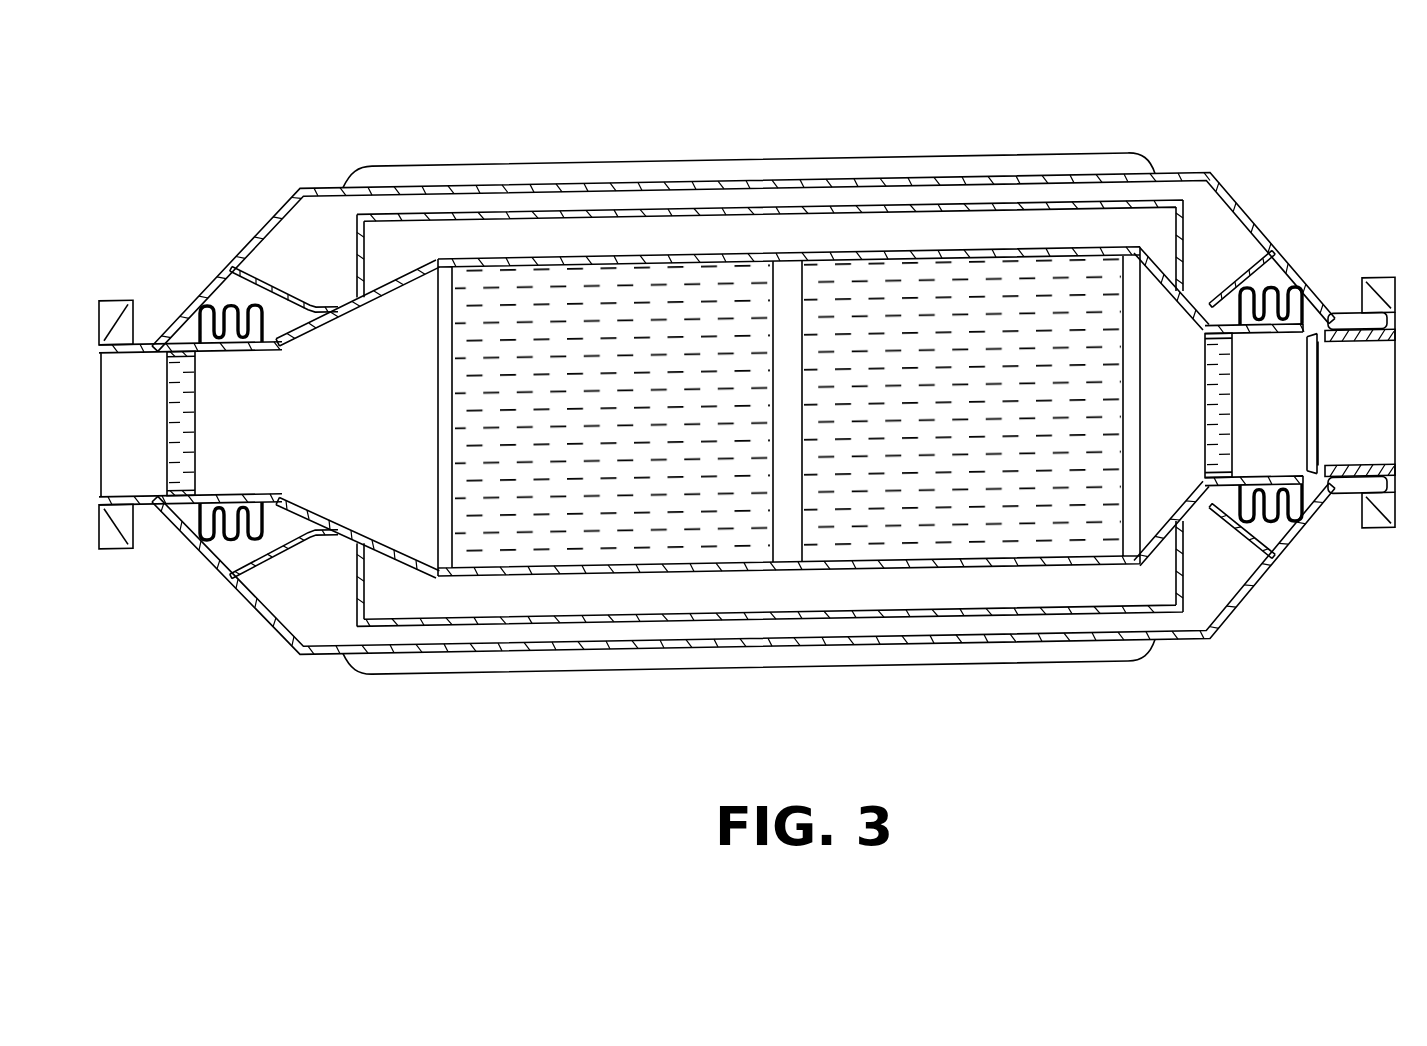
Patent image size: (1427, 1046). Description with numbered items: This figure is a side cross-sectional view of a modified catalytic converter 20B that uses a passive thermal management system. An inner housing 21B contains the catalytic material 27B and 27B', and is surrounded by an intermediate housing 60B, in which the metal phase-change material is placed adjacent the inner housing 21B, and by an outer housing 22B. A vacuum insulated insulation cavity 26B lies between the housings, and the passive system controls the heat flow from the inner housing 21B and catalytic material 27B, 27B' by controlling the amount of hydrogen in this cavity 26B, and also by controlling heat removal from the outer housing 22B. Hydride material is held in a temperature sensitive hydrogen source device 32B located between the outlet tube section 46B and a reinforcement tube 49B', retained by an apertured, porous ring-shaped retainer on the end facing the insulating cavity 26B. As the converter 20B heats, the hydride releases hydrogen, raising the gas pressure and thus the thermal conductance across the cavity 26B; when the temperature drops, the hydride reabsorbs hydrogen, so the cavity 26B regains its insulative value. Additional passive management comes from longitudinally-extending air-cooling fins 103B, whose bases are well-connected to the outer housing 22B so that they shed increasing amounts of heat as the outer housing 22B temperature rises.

The catalytic converter 20B is at (260, 207).
The outer housing 22B is at (338, 183).
The inner housing 21B is at (478, 256).
The intermediate housing 60B is at (562, 208).
The air-cooling fins 103B is at (708, 160).
The insulation cavity 26B is at (312, 592).
The catalytic material 27B is at (614, 510).
The catalytic material 27B' is at (982, 493).
The reinforcement tube 49B' is at (1291, 343).
The temperature sensitive hydrogen source device 32B is at (1350, 315).
The outlet tube section 46B is at (1362, 344).